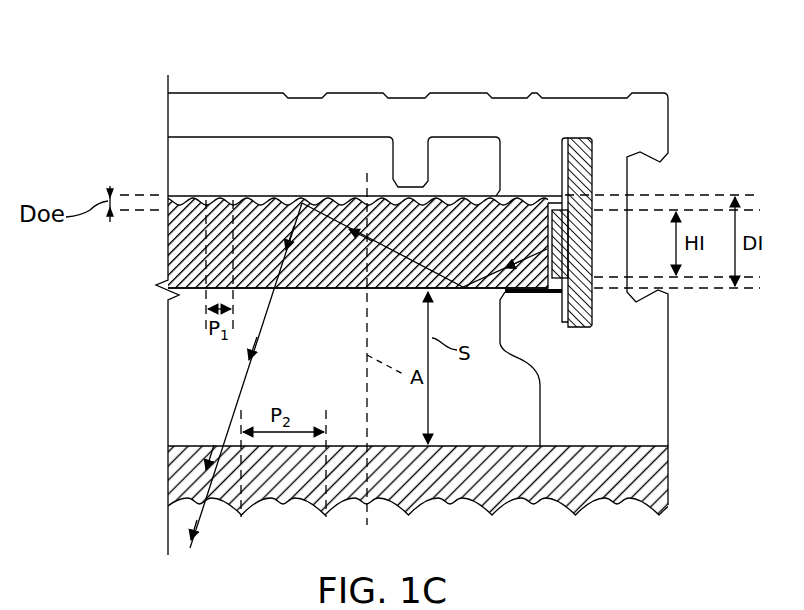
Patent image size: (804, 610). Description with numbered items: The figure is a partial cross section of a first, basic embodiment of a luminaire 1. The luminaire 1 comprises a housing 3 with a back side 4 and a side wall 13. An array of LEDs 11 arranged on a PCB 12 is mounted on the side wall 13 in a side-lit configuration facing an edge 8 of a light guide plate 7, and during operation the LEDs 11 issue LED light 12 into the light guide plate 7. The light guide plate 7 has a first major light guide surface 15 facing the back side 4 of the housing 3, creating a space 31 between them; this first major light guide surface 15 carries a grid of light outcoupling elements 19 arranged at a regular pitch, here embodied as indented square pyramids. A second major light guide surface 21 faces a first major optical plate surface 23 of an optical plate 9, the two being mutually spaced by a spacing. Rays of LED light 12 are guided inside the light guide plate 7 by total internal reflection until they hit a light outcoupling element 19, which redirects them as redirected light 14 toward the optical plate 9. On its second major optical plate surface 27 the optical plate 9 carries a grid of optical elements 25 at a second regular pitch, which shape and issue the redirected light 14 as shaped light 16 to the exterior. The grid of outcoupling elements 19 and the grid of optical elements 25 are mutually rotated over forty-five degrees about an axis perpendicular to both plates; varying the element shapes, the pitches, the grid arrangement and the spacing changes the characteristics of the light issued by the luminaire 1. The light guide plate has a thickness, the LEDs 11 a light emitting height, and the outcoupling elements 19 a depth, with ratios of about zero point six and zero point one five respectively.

The luminaire 1 is at (117, 73).
The housing 3 is at (658, 125).
The back side 4 is at (218, 112).
The space 31 is at (320, 148).
The light guide plate 7 is at (510, 196).
The edge 8 is at (546, 231).
The optical plate 9 is at (666, 470).
The LEDs 11 is at (545, 192).
The LED light 12 is at (392, 248).
The side wall 13 is at (650, 375).
The redirected light 14 is at (256, 340).
The first major light guide surface 15 is at (497, 194).
The shaped light 16 is at (194, 542).
The light outcoupling elements 19 is at (308, 197).
The second major light guide surface 21 is at (352, 290).
The first major optical plate surface 23 is at (478, 446).
The optical elements 25 is at (592, 508).
The second major optical plate surface 27 is at (482, 512).